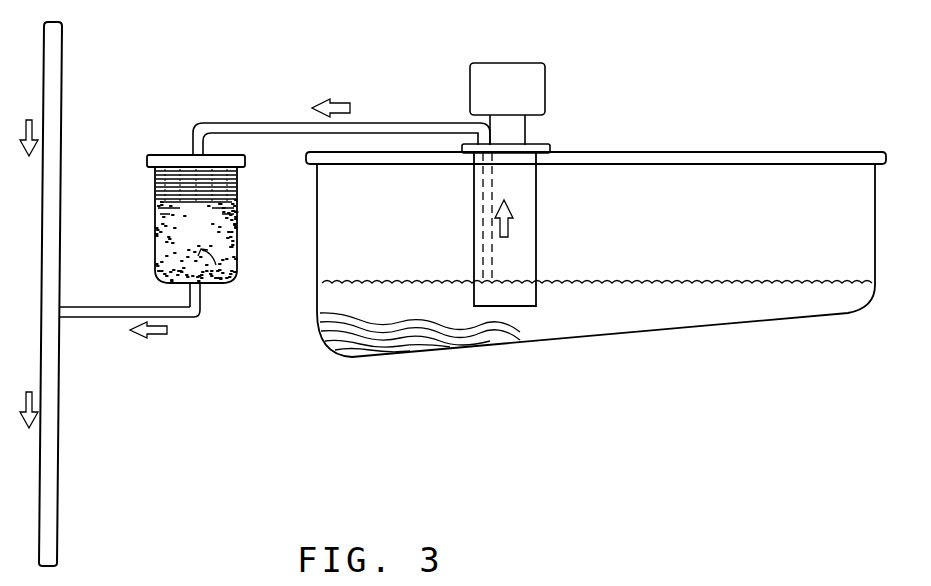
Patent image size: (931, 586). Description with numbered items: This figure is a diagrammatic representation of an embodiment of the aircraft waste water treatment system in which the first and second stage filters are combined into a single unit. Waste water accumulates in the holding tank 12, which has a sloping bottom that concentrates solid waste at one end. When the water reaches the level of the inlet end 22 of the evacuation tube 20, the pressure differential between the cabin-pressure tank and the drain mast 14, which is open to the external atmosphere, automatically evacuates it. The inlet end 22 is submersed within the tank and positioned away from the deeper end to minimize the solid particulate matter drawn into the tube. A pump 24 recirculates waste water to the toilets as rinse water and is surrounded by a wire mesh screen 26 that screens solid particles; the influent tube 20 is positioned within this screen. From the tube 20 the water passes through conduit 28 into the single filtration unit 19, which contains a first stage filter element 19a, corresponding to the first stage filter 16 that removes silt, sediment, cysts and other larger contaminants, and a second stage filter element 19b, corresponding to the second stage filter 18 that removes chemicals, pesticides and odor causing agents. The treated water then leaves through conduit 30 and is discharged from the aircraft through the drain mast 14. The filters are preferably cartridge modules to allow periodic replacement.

The holding tank 12 is at (612, 334).
The drain mast 14 is at (60, 513).
The first stage filter 16 is at (185, 223).
The second stage filter 18 is at (211, 290).
The single filtration unit 19 is at (185, 226).
The first stage filter element 19a is at (155, 193).
The second stage filter element 19b is at (153, 245).
The evacuation tube 20 is at (368, 126).
The inlet end 22 is at (480, 220).
The pump 24 is at (505, 63).
The wire mesh screen 26 is at (537, 243).
The conduit 28 is at (232, 123).
The conduit 30 is at (204, 318).